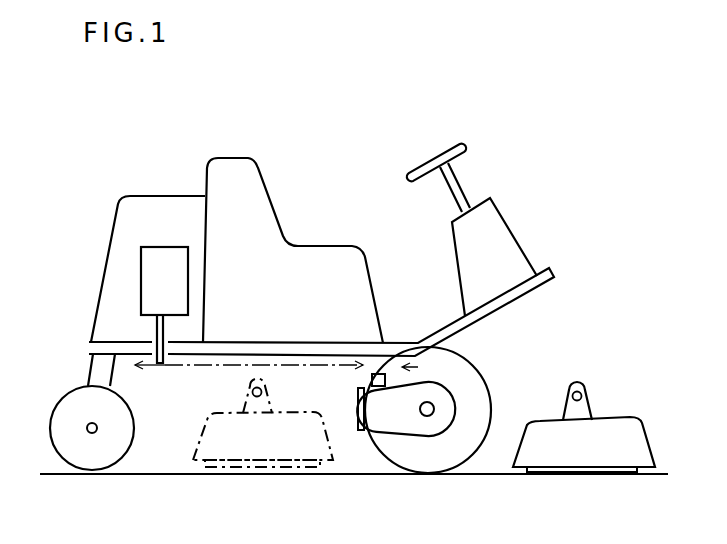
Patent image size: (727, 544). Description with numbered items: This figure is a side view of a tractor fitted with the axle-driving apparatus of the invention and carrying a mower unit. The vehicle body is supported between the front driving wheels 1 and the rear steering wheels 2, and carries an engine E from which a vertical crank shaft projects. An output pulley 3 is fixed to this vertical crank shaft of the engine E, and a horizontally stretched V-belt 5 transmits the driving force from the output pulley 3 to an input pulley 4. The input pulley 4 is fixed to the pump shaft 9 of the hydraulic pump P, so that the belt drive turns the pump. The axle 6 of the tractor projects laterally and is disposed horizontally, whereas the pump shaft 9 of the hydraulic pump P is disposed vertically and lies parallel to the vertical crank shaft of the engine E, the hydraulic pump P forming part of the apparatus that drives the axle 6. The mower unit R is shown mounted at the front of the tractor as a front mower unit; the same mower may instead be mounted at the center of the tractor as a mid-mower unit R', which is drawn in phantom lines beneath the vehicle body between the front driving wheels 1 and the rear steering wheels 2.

The front driving wheel 1 is at (498, 387).
The rear steering wheel 2 is at (50, 432).
The output pulley 3 is at (168, 366).
The input pulley 4 is at (362, 371).
The V-belt 5 is at (285, 367).
The axle 6 is at (427, 416).
The pump shaft 9 is at (382, 375).
The engine E is at (164, 305).
The hydraulic pump P is at (359, 448).
The mower unit R is at (584, 425).
The mid-mower unit R' is at (243, 423).